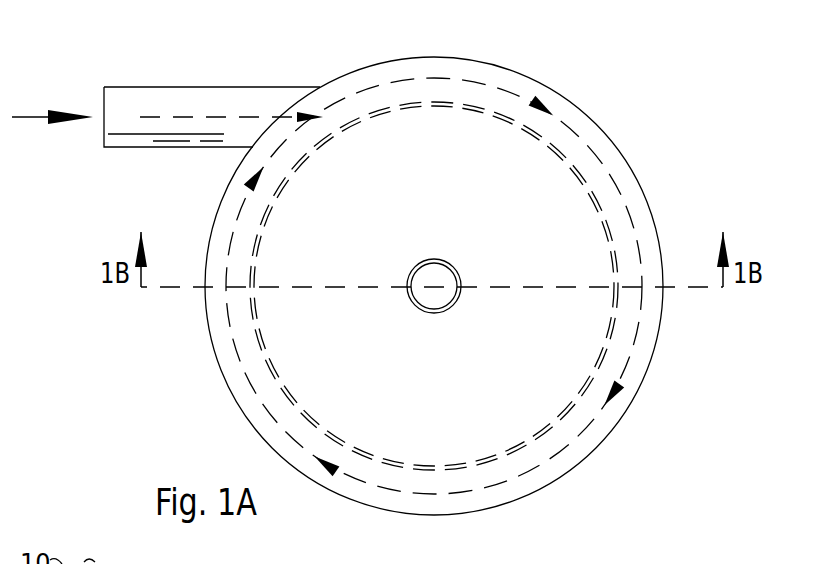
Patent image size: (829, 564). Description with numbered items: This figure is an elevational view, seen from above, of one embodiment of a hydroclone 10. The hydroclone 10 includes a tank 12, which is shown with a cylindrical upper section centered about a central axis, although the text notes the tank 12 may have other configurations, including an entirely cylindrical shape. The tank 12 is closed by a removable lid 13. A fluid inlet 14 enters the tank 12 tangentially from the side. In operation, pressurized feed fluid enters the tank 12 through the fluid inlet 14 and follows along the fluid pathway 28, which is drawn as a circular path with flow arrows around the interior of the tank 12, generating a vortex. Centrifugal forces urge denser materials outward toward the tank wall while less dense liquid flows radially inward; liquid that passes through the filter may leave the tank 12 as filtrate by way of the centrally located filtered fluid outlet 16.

The hydroclone 10 is at (660, 114).
The tank 12 is at (653, 350).
The removable lid 13 is at (630, 212).
The fluid inlet 14 is at (192, 87).
The filtered fluid outlet 16 is at (413, 312).
The fluid pathway 28 is at (498, 88).